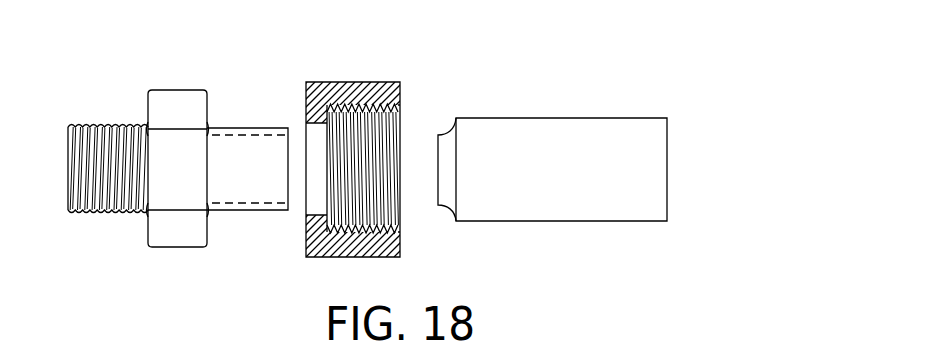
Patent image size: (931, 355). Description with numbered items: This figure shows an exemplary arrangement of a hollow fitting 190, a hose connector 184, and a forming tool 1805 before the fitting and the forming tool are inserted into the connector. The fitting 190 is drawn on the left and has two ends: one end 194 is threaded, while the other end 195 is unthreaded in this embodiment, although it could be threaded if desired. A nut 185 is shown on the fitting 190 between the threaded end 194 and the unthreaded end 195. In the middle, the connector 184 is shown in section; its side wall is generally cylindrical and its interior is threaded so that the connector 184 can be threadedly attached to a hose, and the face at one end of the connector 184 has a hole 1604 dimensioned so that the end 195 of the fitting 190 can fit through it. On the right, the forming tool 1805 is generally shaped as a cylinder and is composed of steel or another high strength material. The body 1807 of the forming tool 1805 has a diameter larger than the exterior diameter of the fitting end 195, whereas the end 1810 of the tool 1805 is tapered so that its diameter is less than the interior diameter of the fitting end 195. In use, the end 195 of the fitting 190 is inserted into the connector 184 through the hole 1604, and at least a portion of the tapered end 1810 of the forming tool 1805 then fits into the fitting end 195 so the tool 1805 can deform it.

The hollow fitting 190 is at (161, 150).
The threaded end of fitting 194 is at (101, 125).
The nut 185 is at (178, 98).
The unthreaded end of fitting 195 is at (236, 128).
The connector 184 is at (323, 154).
The hole 1604 is at (305, 137).
The forming tool 1805 is at (614, 160).
The body of forming tool 1807 is at (556, 124).
The tapered end of forming tool 1810 is at (443, 208).